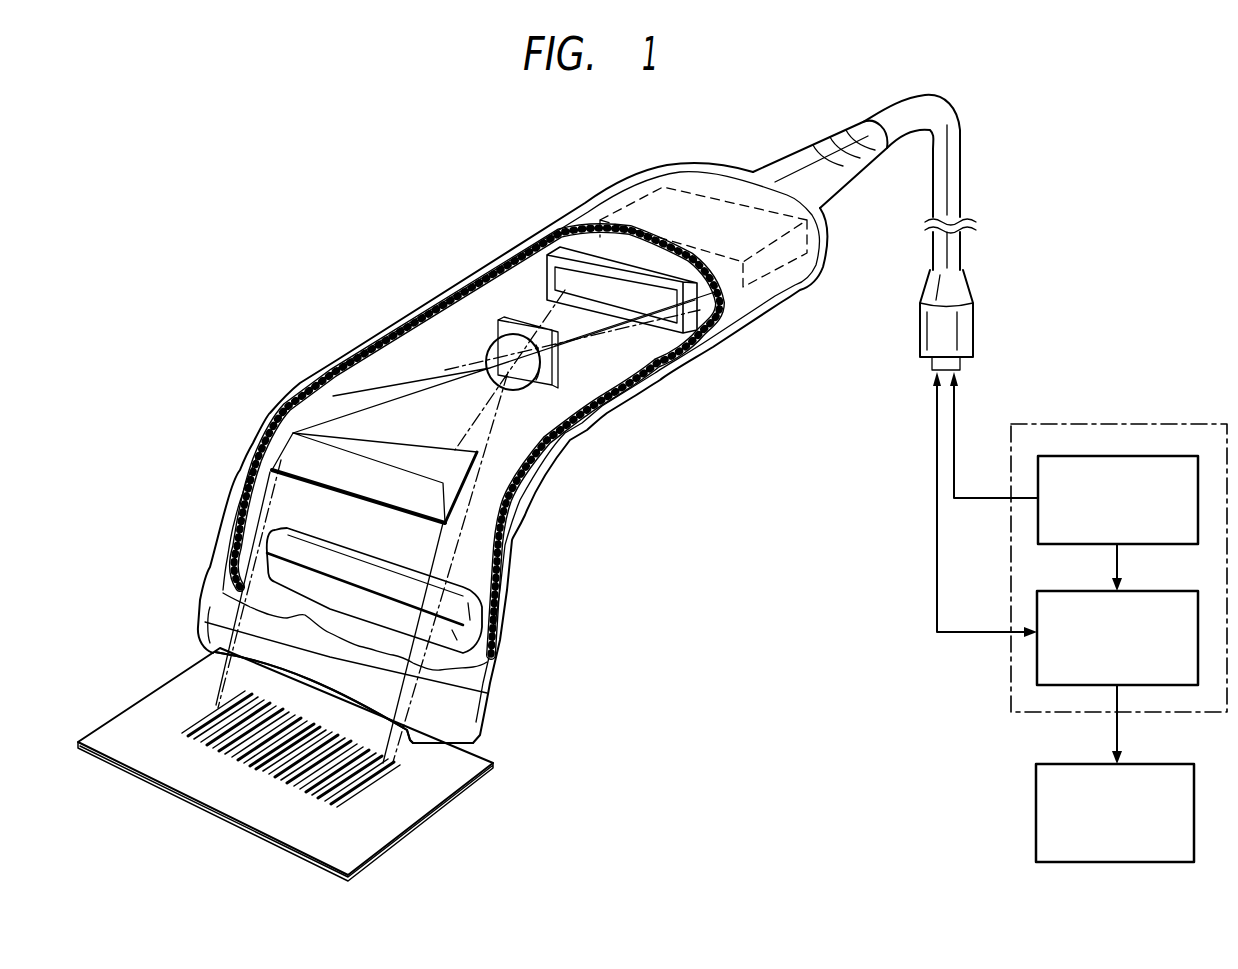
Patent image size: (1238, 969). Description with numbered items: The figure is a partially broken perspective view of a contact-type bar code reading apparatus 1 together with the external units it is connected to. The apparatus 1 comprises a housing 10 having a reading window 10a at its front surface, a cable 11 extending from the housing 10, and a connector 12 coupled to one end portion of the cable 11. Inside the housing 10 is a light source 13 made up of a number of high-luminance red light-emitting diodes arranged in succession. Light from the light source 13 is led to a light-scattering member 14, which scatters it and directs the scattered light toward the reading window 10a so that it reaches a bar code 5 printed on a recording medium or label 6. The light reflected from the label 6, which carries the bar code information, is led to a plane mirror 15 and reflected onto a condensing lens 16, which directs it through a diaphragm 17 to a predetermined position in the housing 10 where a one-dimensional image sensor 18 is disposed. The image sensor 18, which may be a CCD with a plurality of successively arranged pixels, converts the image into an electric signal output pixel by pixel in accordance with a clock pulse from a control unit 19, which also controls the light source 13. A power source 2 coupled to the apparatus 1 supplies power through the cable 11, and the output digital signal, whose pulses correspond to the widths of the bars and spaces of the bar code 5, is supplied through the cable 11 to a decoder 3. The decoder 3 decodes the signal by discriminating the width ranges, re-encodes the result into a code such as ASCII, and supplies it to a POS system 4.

The bar code reading apparatus 1 is at (485, 198).
The power source 2 is at (1178, 452).
The decoder 3 is at (1178, 584).
The POS system 4 is at (1198, 778).
The bar code 5 is at (200, 706).
The recording medium (label) 6 is at (137, 702).
The housing 10 is at (690, 165).
The reading window 10a is at (432, 748).
The cable 11 is at (953, 104).
The connector 12 is at (978, 318).
The light source 13 is at (480, 590).
The light-scattering member 14 is at (476, 650).
The plane mirror 15 is at (333, 397).
The condensing lens 16 is at (482, 353).
The diaphragm 17 is at (517, 322).
The one-dimensional image sensor 18 is at (577, 255).
The control unit 19 is at (716, 196).